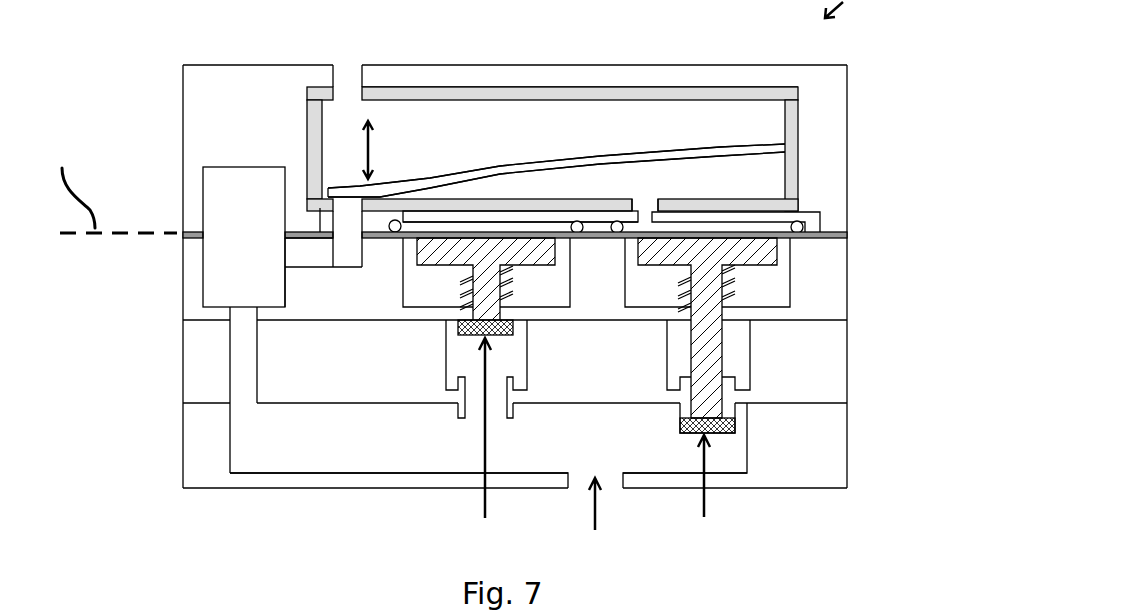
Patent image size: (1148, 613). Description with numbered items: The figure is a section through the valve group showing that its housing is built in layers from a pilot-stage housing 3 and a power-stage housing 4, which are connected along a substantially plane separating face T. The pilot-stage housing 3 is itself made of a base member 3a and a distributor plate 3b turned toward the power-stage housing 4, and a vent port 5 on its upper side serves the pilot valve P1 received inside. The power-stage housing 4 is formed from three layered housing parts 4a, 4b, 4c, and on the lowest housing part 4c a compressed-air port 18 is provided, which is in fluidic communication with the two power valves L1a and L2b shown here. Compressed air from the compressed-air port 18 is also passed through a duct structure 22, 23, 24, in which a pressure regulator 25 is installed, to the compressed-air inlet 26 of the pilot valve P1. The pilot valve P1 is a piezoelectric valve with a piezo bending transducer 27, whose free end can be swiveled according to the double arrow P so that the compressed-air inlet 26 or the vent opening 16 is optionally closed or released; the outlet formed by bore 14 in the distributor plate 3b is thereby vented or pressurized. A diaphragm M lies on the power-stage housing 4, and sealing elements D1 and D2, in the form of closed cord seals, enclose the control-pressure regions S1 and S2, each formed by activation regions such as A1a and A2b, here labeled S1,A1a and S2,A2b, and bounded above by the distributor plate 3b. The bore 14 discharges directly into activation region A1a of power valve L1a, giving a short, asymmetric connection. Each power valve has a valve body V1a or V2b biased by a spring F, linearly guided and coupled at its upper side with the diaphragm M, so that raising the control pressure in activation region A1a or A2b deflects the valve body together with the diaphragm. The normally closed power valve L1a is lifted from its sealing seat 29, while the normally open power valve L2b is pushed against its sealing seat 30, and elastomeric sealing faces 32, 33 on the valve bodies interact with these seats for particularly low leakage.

The pilot-stage housing 3 is at (177, 233).
The base member 3a is at (828, 143).
The distributor plate 3b is at (808, 217).
The power-stage housing 4 is at (177, 245).
The housing part 4a is at (833, 293).
The housing part 4b is at (830, 365).
The lowest housing part 4c is at (830, 442).
The vent port 5 is at (334, 76).
The vent opening 16 is at (362, 92).
The bore 14 is at (647, 213).
The piezo bending transducer 27 is at (740, 226).
The compressed-air inlet 26 is at (348, 211).
The pressure regulator 25 is at (242, 253).
The duct structure 24 is at (317, 252).
The duct structure 23 is at (243, 377).
The duct structure 22 is at (307, 443).
The compressed-air port 18 is at (594, 522).
The sealing seat 29 is at (733, 417).
The sealing seat 30 is at (462, 368).
The sealing face 32 is at (720, 427).
The sealing face 33 is at (502, 327).
The control-pressure region and activation region S1,A1a is at (650, 139).
The control-pressure region S1 is at (650, 139).
The activation region A1a is at (740, 226).
The control-pressure region and activation region S2,A2b is at (520, 117).
The control-pressure region S2 is at (520, 117).
The activation region A2b is at (485, 227).
The sealing element D1 is at (617, 221).
The sealing element D2 is at (396, 220).
The pilot valve P1 is at (559, 145).
The double arrow P is at (379, 150).
The diaphragm M is at (833, 233).
The separating face T is at (111, 181).
The spring F is at (508, 293).
The valve body V1a is at (710, 358).
The valve body V2b is at (437, 254).
The power valve L1a is at (704, 494).
The power valve L2b is at (484, 450).